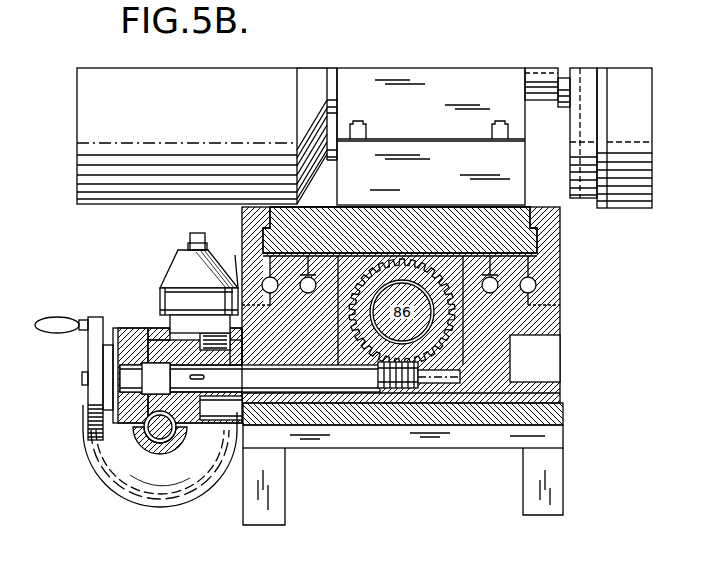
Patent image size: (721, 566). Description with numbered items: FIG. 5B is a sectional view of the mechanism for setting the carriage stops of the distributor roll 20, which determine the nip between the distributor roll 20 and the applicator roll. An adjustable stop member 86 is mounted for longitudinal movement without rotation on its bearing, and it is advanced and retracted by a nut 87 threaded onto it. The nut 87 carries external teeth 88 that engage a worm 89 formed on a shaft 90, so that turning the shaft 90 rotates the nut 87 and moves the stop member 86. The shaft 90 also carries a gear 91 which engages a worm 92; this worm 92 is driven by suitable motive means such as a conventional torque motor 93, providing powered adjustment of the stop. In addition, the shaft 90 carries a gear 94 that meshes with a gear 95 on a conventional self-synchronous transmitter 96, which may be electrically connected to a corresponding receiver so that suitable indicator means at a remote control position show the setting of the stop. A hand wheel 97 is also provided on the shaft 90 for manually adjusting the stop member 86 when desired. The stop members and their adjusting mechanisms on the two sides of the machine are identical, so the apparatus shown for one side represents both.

The distributor roll 20 is at (82, 143).
The stop member 86 is at (402, 312).
The nut 87 is at (432, 333).
The external teeth 88 is at (452, 366).
The worm 89 is at (395, 388).
The shaft 90 is at (310, 365).
The gear 91 is at (145, 337).
The worm 92 is at (160, 437).
The torque motor 93 is at (123, 475).
The gear 94 is at (227, 407).
The gear 95 is at (210, 340).
The self-synchronous transmitter 96 is at (185, 325).
The hand wheel 97 is at (58, 318).